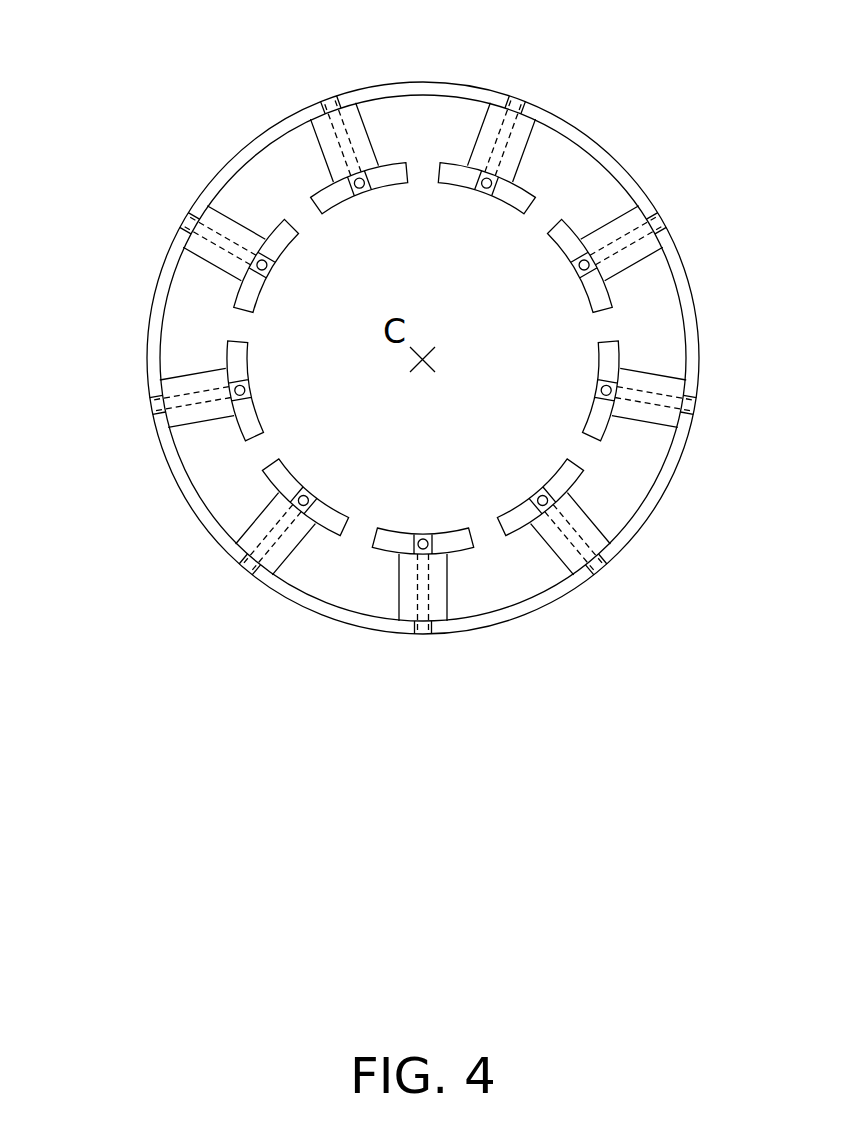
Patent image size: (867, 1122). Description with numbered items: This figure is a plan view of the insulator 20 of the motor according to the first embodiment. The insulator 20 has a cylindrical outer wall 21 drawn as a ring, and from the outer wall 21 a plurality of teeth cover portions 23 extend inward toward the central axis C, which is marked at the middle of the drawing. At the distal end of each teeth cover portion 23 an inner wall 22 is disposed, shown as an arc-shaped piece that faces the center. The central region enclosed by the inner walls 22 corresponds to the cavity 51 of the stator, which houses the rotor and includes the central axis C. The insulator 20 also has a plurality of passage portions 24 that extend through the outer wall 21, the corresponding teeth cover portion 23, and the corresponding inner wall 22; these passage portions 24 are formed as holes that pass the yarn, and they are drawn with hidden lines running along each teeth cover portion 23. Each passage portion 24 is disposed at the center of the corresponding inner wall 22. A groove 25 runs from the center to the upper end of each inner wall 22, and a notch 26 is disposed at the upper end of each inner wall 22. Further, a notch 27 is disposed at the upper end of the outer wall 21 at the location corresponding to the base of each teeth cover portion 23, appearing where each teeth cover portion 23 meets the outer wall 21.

The insulator 20 is at (411, 323).
The outer wall 21 is at (675, 258).
The inner wall 22 is at (580, 302).
The teeth cover portion 23 is at (612, 232).
The passage portion 24 is at (510, 145).
The groove 25 is at (485, 196).
The notch 26 is at (480, 176).
The notch 27 is at (343, 93).
The cavity 51 is at (497, 437).